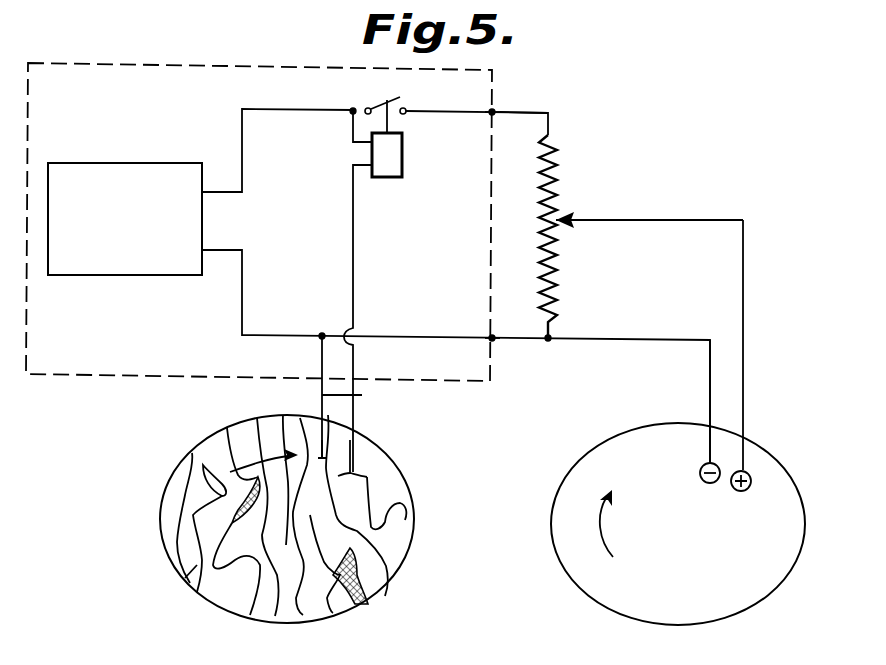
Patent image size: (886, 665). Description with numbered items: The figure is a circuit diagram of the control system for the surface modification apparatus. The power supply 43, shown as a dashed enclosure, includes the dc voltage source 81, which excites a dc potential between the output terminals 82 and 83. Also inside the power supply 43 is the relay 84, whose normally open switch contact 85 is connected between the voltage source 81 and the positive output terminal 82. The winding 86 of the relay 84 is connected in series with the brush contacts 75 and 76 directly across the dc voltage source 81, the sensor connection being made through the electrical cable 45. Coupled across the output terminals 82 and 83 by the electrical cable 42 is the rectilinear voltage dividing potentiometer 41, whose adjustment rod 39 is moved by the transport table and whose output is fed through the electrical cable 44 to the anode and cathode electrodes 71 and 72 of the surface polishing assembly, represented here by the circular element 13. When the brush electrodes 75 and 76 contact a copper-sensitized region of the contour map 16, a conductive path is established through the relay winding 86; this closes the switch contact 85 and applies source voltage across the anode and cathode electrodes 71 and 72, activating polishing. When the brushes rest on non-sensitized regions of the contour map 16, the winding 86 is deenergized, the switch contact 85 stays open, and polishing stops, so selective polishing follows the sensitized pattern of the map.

The storage battery 13 is at (822, 490).
The contour map 16 is at (414, 541).
The adjustment rod 39 is at (561, 217).
The voltage dividing potentiometer 41 is at (550, 168).
The electrical cable 42 is at (526, 112).
The power supply 43 is at (210, 64).
The electrical cable 44 is at (710, 392).
The electrical cable 45 is at (355, 402).
The anode electrode 71 is at (748, 474).
The cathode electrode 72 is at (704, 464).
The brush contact 75 is at (311, 448).
The brush contact 76 is at (340, 470).
The dc voltage source 81 is at (123, 162).
The positive output terminal 82 is at (494, 108).
The output terminal 83 is at (488, 342).
The relay 84 is at (393, 176).
The normally open switch contact 85 is at (408, 98).
The winding 86 is at (400, 157).